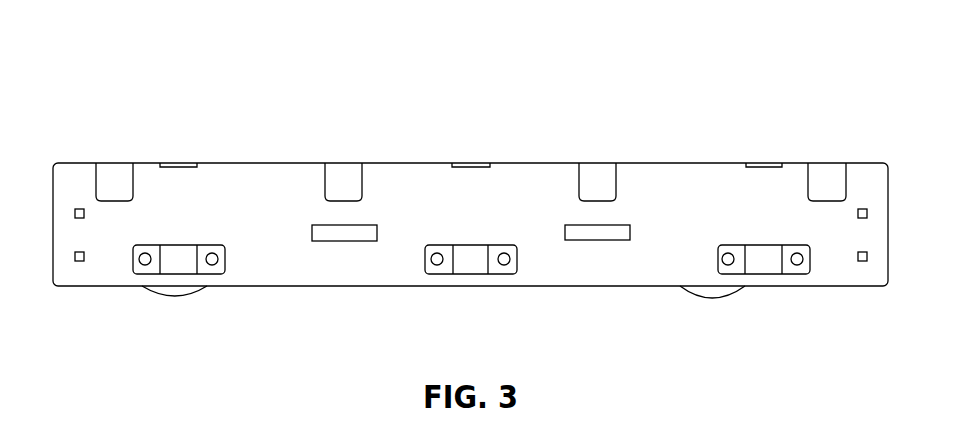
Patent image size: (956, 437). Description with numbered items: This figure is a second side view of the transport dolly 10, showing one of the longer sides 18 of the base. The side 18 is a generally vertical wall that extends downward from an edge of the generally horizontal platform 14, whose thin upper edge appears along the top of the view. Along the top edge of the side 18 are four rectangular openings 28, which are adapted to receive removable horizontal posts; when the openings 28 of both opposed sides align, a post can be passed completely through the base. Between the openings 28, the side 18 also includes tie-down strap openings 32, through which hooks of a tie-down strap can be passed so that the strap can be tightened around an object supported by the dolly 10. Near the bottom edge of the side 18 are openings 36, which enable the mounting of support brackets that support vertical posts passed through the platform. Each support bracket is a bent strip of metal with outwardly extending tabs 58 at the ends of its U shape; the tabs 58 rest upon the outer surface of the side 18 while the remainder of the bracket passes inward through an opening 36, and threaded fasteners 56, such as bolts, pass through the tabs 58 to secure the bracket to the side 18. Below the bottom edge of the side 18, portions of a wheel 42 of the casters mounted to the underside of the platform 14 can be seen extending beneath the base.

The transport dolly 10 is at (719, 64).
The platform 14 is at (627, 163).
The sides 18 is at (408, 176).
The openings 28 is at (115, 178).
The tie-down strap openings 32 is at (312, 232).
The openings 36 is at (176, 258).
The wheel 42 is at (178, 296).
The threaded fasteners 56 is at (145, 252).
The tabs 58 is at (135, 272).